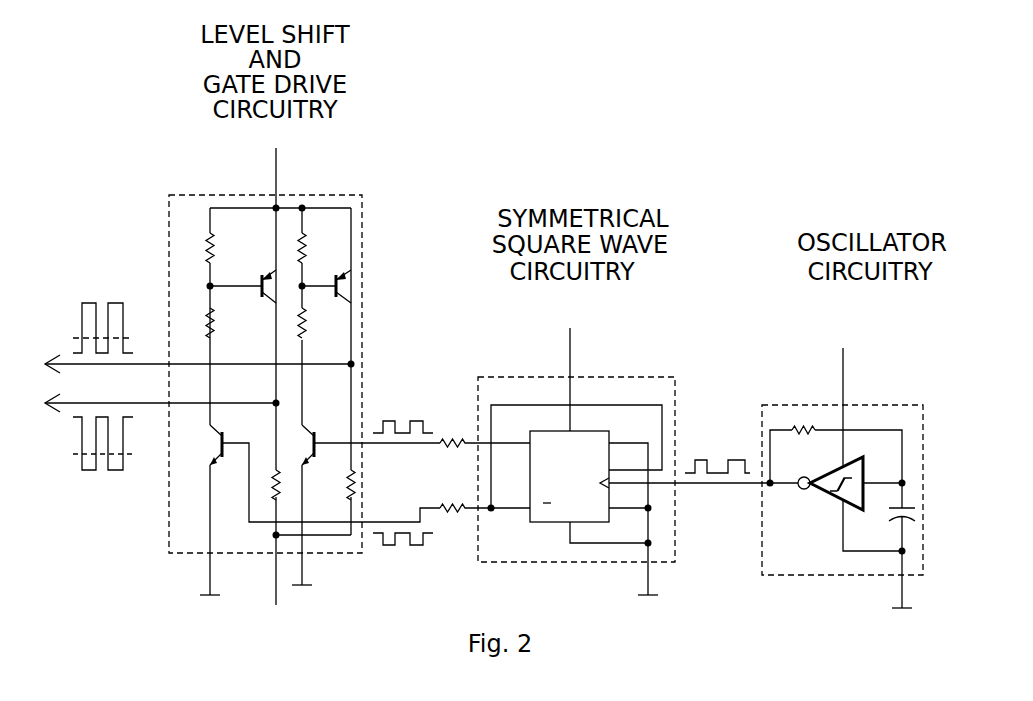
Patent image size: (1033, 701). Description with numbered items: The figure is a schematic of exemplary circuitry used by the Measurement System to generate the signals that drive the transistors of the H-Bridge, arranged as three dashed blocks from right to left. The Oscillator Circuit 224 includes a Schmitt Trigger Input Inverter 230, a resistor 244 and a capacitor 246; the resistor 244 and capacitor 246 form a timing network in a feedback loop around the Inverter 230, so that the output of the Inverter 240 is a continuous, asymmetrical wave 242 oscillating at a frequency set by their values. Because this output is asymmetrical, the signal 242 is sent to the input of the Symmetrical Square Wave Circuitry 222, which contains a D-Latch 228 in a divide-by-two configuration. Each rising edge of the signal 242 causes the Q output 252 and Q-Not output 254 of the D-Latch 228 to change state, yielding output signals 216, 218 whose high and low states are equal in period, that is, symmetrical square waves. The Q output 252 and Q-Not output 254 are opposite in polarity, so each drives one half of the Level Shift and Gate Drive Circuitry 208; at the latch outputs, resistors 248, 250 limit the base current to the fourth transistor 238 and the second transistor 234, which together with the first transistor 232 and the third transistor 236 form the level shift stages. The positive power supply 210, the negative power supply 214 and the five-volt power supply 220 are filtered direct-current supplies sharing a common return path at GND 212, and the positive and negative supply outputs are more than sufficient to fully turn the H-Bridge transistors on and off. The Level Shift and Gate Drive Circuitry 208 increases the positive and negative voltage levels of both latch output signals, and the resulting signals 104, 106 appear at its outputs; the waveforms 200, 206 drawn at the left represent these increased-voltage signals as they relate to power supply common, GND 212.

The waveform 200 is at (94, 301).
The waveform 206 is at (100, 471).
The output signal 104 is at (103, 367).
The output signal 106 is at (117, 401).
The Level Shift and Gate Drive Circuitry 208 is at (192, 205).
The +V power supply 210 is at (273, 192).
The GND 212 is at (207, 565).
The −V power supply 214 is at (272, 568).
The output signal 216 is at (413, 418).
The output signal 218 is at (395, 548).
The +5 Volts power supply 220 is at (563, 362).
The Symmetrical Square Wave Circuitry 222 is at (630, 388).
The Oscillator Circuit 224 is at (885, 408).
The D-Latch 228 is at (563, 513).
The Schmitt Trigger Input Inverter 230 is at (826, 490).
The transistor T1 232 is at (258, 296).
The transistor T2 234 is at (229, 440).
The transistor T3 236 is at (337, 295).
The transistor T4 238 is at (320, 437).
The output of the Inverter 240 is at (717, 485).
The asymmetrical wave 242 is at (712, 463).
The resistor 244 is at (797, 425).
The capacitor 246 is at (908, 502).
The resistor 248 is at (458, 437).
The resistor 250 is at (460, 515).
The Q output 252 is at (523, 439).
The Q-Not output 254 is at (515, 512).